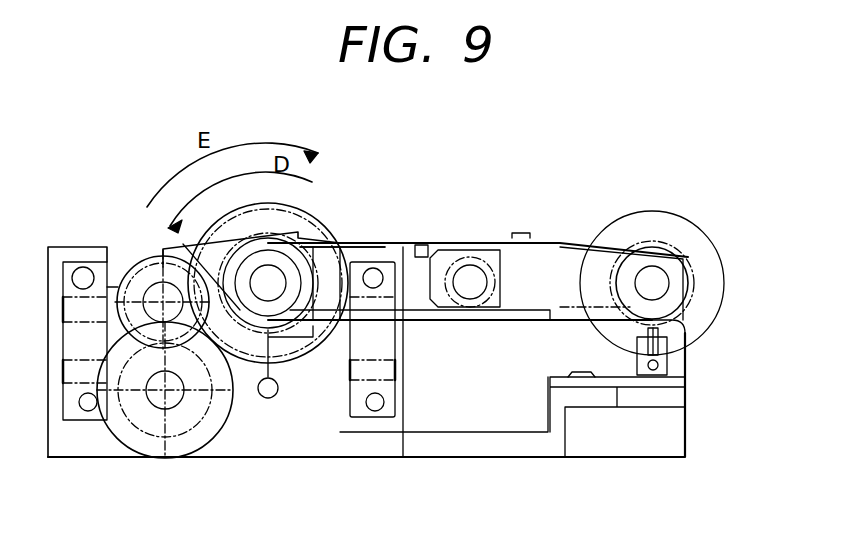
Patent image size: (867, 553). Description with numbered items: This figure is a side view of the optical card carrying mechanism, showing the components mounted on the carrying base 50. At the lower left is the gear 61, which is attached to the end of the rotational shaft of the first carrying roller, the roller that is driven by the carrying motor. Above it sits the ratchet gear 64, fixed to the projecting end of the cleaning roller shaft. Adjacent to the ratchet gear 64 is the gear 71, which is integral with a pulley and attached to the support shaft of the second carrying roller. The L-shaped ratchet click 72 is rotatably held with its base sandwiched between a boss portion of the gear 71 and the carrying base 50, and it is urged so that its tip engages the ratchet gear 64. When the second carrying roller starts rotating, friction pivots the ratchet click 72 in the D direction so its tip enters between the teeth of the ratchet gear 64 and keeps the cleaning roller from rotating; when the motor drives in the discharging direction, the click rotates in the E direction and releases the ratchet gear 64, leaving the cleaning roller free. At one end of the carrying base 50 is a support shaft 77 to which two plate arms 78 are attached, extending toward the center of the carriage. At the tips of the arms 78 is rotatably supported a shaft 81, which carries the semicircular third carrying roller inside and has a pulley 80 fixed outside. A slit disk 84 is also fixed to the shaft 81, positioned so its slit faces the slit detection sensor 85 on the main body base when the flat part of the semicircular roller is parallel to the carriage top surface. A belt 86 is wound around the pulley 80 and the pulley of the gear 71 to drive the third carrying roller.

The carrying base 50 is at (278, 430).
The gear 61 is at (127, 450).
The ratchet gear 64 is at (140, 277).
The gear 71 is at (306, 222).
The ratchet click 72 is at (172, 248).
The support shaft 77 is at (463, 265).
The plate arm 78 is at (547, 260).
The pulley 80 is at (685, 297).
The shaft 81 is at (657, 267).
The slit disk 84 is at (693, 243).
The slit detection sensor 85 is at (667, 372).
The belt 86 is at (475, 325).